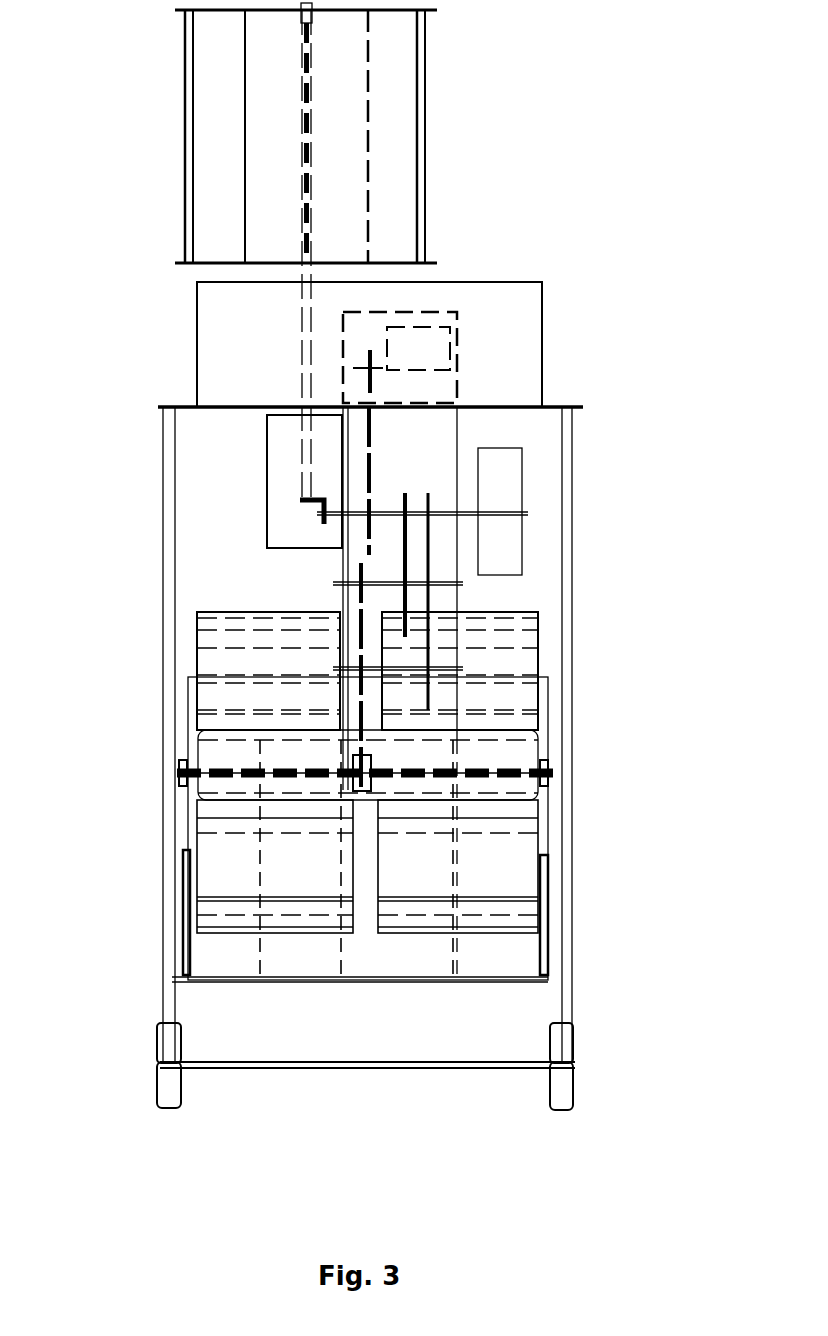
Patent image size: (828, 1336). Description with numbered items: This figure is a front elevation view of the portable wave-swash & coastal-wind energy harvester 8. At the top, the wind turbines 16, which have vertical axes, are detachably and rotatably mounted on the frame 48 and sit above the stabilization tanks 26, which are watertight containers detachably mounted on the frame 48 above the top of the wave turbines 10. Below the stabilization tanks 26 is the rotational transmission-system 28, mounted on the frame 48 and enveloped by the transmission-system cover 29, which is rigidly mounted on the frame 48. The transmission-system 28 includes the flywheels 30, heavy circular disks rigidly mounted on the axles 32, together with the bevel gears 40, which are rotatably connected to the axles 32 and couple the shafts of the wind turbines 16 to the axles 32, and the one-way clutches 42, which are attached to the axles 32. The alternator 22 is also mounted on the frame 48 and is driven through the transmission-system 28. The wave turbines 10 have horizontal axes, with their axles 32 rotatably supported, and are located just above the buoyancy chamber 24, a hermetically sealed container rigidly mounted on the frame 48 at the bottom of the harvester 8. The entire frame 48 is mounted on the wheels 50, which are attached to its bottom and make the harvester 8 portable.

The portable wave-swash & coastal-wind energy harvester 8 is at (378, 560).
The wind turbines 16 is at (185, 122).
The stabilization tanks 26 is at (197, 340).
The alternator 22 is at (425, 318).
The rotational transmission-system 28 is at (408, 444).
The transmission-system cover 29 is at (458, 435).
The flywheels 30 is at (522, 480).
The axles 32 is at (528, 512).
The bevel gears 40 is at (297, 502).
The one-way clutches 42 is at (318, 518).
The wave turbines 10 is at (538, 638).
The frame 48 is at (160, 918).
The wheels 50 is at (157, 1087).
The buoyancy chamber 24 is at (255, 1062).